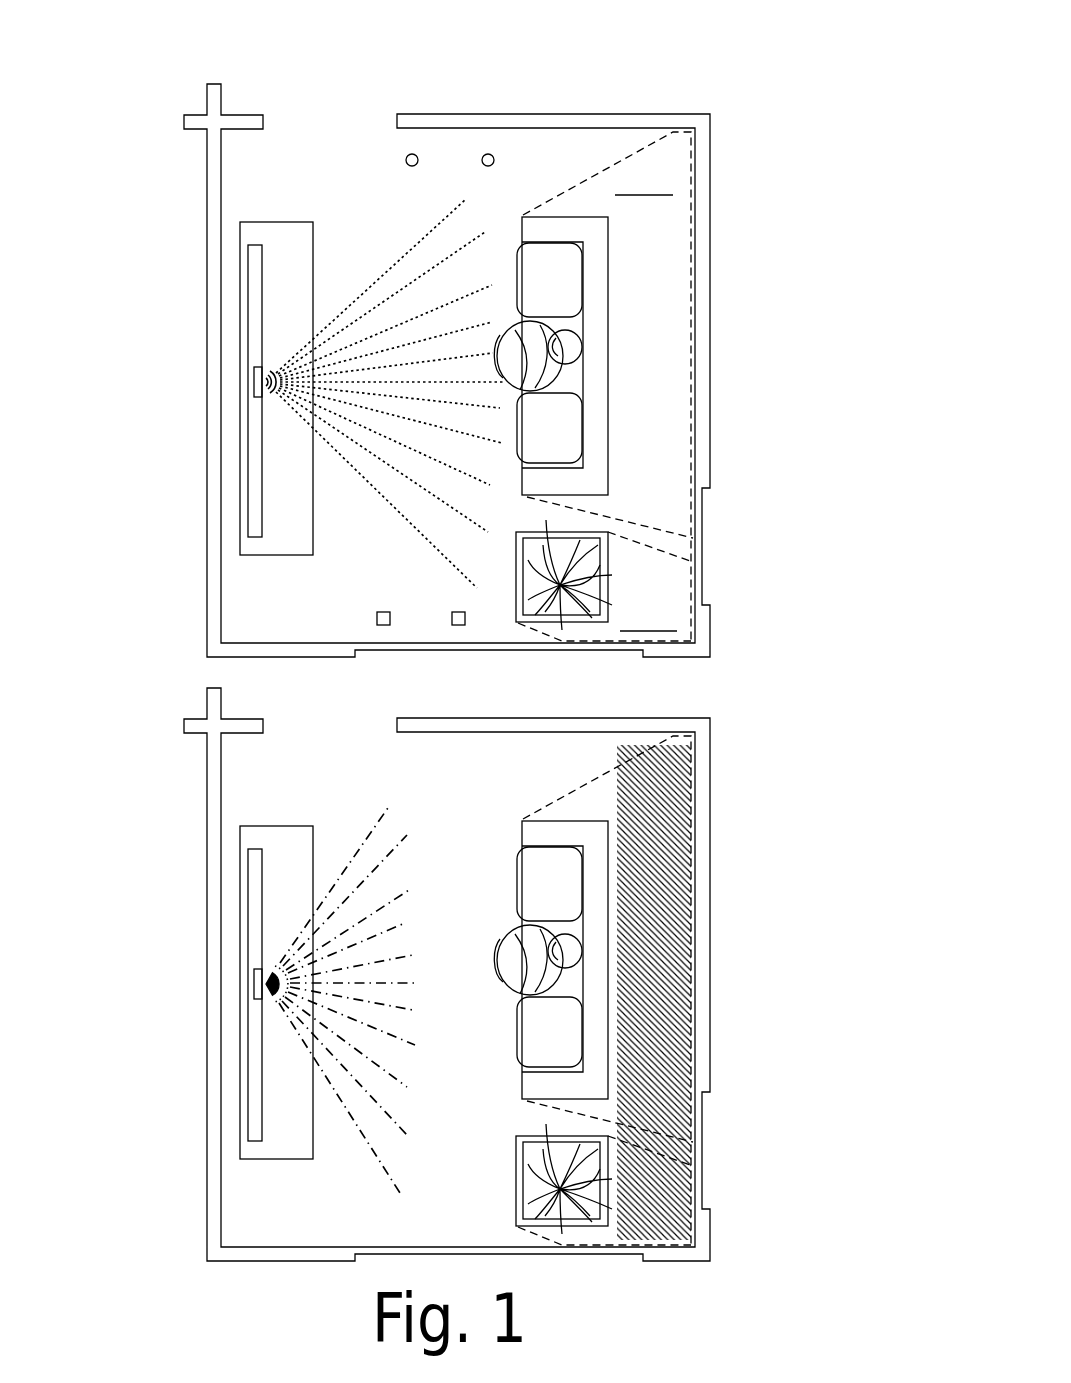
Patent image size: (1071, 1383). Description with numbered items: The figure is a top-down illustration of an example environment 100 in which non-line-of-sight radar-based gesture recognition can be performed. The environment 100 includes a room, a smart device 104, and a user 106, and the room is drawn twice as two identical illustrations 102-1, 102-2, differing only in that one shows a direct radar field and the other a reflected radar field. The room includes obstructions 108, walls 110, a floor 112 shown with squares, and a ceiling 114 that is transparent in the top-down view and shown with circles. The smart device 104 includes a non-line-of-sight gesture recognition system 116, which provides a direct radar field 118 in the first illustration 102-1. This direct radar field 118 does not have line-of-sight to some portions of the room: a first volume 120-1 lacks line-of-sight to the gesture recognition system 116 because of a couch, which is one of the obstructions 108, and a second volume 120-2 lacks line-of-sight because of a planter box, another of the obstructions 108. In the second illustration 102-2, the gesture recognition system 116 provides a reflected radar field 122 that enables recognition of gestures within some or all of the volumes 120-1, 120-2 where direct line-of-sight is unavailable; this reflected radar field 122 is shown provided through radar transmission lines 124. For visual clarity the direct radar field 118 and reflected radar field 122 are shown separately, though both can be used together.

The environment 100 is at (788, 63).
The room (first illustration) 102-1 is at (732, 178).
The room (second illustration) 102-2 is at (732, 782).
The smart device 104 is at (253, 488).
The user 106 is at (578, 383).
The obstructions 108 is at (603, 588).
The walls 110 is at (248, 653).
The floor 112 is at (458, 626).
The ceiling 114 is at (484, 154).
The non-line-of-sight gesture recognition system 116 is at (254, 380).
The direct radar field 118 is at (437, 260).
The first volume 120-1 is at (607, 386).
The second volume 120-2 is at (605, 569).
The reflected radar field 122 is at (657, 1175).
The radar transmission lines 124 is at (385, 1045).